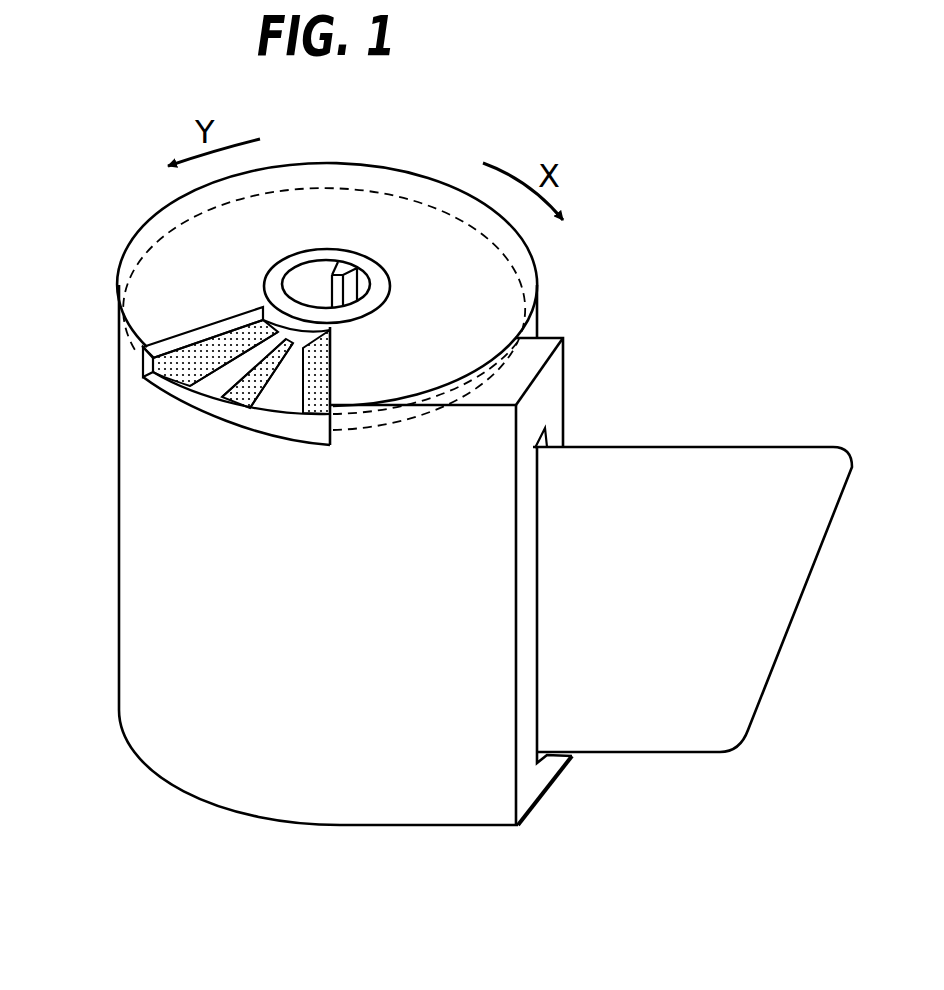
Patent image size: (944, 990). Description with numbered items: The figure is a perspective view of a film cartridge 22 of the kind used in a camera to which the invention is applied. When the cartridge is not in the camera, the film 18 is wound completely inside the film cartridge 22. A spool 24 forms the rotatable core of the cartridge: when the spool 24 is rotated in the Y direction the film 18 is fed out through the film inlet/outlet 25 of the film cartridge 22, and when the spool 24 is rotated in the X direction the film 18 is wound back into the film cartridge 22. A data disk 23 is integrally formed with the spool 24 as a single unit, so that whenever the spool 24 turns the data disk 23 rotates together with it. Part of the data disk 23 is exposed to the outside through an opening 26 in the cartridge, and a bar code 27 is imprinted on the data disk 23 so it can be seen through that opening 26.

The film 18 is at (775, 460).
The film cartridge 22 is at (187, 662).
The data disk 23 is at (273, 418).
The spool 24 is at (377, 262).
The film inlet/outlet 25 is at (538, 692).
The opening 26 is at (193, 345).
The bar code 27 is at (218, 382).